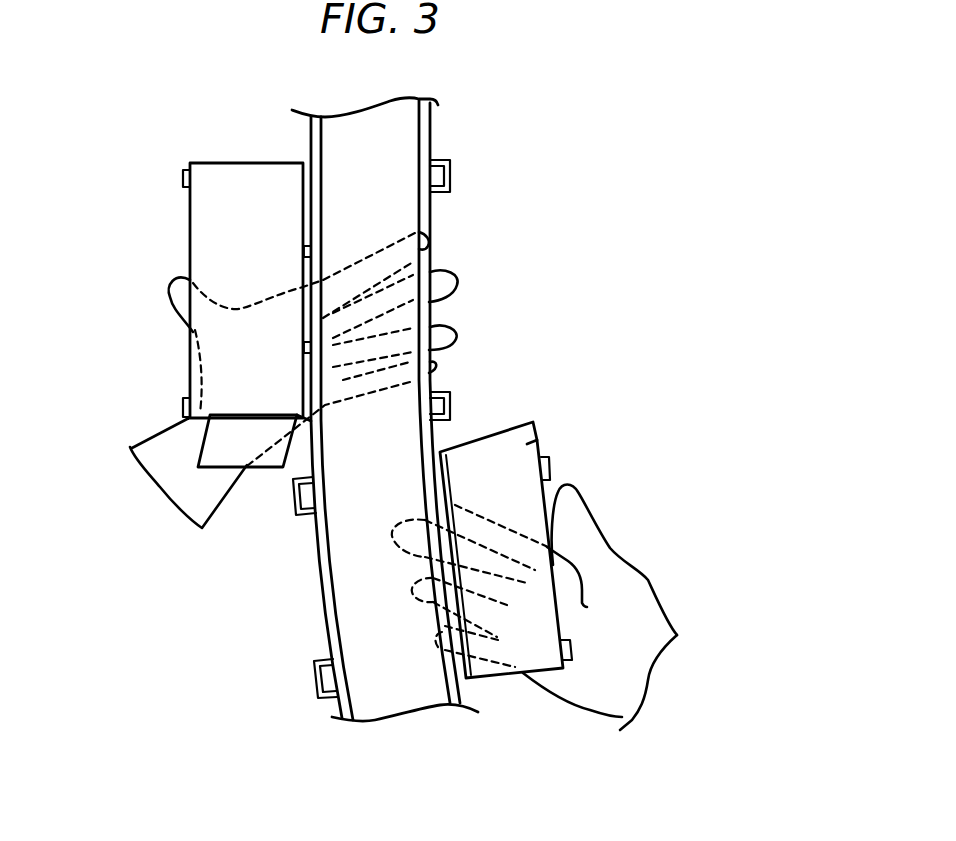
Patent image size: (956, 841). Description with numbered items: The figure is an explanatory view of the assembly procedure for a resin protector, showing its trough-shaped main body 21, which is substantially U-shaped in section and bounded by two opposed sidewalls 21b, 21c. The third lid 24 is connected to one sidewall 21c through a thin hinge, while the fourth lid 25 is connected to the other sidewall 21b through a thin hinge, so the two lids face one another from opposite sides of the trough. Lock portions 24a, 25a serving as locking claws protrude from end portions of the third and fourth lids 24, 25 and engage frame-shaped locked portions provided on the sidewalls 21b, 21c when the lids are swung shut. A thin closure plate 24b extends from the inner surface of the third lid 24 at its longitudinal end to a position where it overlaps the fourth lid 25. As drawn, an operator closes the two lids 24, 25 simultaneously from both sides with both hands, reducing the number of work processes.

The main body 21 is at (394, 409).
The sidewall 21b is at (432, 313).
The sidewall 21c is at (328, 617).
The third lid 24 is at (195, 287).
The lock portion 24a is at (183, 177).
The thin closure plate 24b is at (265, 463).
The fourth lid 25 is at (560, 547).
The lock portion 25a is at (550, 463).